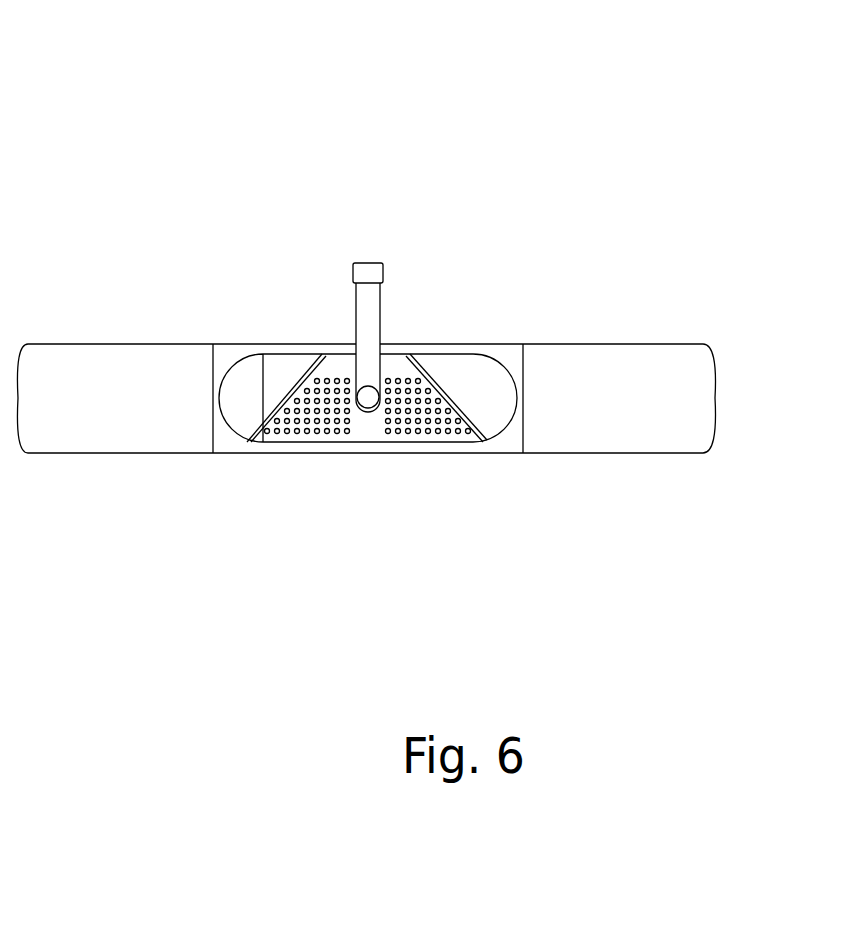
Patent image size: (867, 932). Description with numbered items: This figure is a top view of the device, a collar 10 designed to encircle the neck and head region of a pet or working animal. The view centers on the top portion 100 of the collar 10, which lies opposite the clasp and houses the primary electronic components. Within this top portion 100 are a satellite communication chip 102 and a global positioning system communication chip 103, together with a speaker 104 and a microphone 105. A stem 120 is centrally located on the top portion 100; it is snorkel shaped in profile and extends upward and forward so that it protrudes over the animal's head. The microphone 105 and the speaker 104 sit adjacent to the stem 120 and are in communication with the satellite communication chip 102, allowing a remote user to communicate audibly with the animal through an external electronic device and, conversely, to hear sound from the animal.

The collar 10 is at (366, 233).
The top portion 100 is at (223, 443).
The satellite communication chip 102 is at (460, 365).
The global positioning system (GPS) communication chip 103 is at (252, 385).
The speaker 104 is at (450, 430).
The microphone 105 is at (279, 432).
The stem 120 is at (363, 276).